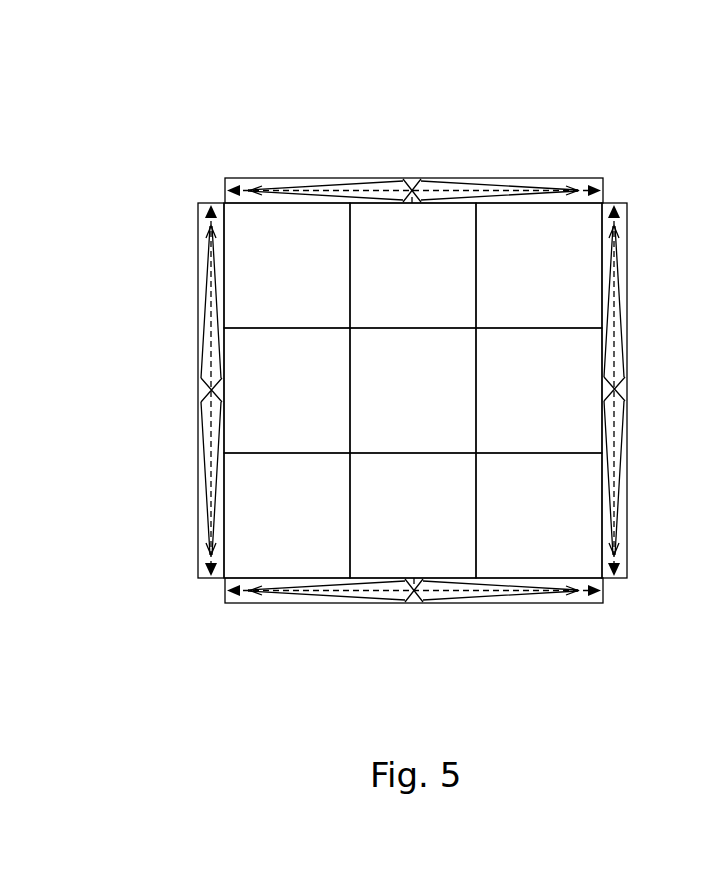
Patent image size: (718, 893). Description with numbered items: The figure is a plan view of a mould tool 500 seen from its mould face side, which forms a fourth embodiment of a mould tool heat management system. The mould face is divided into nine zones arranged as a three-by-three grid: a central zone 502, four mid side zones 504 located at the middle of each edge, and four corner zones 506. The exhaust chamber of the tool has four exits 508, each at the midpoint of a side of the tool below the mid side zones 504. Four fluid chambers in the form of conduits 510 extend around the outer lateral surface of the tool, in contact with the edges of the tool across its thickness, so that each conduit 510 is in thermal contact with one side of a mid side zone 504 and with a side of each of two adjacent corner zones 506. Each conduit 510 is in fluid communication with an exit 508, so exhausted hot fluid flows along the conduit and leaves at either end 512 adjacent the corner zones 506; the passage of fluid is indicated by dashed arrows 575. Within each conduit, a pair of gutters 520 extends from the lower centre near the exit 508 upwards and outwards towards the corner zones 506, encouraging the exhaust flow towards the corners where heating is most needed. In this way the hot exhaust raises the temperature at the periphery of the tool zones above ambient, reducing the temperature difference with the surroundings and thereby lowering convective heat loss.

The mould tool 500 is at (186, 176).
The central zone 502 is at (433, 411).
The mid side zones 504 is at (433, 286).
The corner zones 506 is at (307, 286).
The exits 508 is at (412, 160).
The conduits 510 is at (284, 604).
The conduit ends 512 is at (646, 203).
The gutters 520 is at (200, 322).
The dashed arrows 575 is at (477, 190).